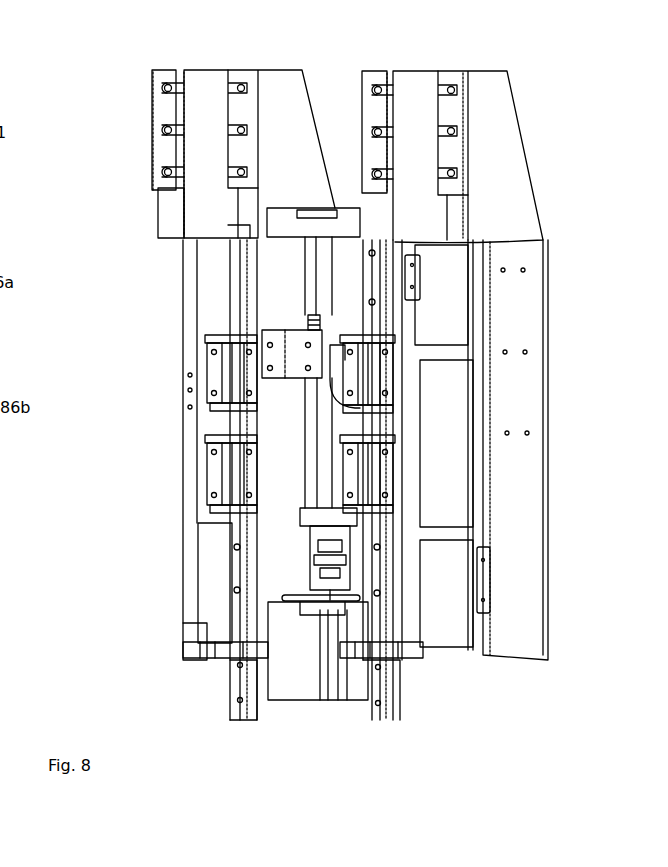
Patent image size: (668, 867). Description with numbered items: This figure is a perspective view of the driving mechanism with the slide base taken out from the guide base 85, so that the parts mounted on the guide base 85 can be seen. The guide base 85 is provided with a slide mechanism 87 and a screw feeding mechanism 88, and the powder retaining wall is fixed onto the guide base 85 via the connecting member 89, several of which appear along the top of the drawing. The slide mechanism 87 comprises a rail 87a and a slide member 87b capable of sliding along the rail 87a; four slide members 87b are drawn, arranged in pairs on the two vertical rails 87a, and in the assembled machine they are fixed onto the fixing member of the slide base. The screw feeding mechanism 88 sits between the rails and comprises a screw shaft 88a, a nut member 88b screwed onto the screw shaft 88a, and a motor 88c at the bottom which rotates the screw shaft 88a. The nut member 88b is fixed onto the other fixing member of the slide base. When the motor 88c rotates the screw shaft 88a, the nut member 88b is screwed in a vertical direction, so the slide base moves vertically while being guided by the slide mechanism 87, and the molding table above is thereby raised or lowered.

The guide base 85 is at (532, 298).
The slide mechanism 87 is at (212, 740).
The rail 87a is at (240, 612).
The slide member 87b is at (213, 378).
The screw feeding mechanism 88 is at (285, 560).
The screw shaft 88a is at (320, 272).
The nut member 88b is at (292, 345).
The motor 88c is at (300, 700).
The connecting member 89 is at (240, 108).